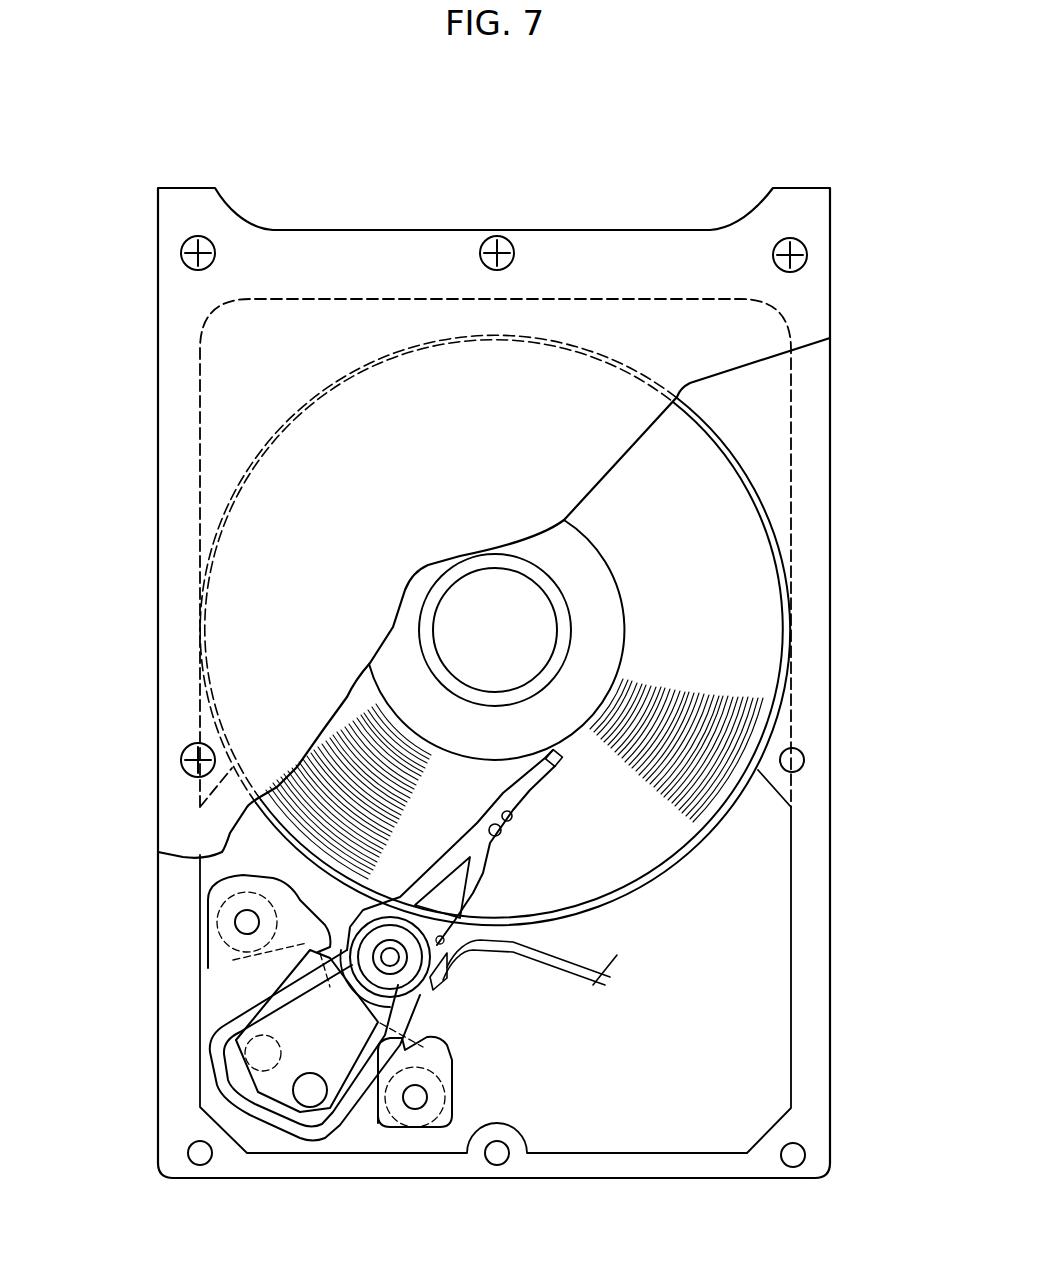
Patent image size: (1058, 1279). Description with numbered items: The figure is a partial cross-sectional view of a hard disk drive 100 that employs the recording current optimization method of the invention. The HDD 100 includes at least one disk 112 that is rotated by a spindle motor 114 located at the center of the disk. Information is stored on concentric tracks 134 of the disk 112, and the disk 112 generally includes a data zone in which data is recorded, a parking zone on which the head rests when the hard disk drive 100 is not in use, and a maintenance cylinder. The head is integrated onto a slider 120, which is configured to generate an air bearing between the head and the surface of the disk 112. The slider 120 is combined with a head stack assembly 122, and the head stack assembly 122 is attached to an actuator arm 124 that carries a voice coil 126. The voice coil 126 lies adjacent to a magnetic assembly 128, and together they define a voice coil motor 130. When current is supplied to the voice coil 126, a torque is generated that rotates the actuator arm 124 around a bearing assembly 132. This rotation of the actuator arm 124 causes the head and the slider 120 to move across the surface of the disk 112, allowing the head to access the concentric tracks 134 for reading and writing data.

The hard disk drive 100 is at (607, 168).
The disk 112 is at (752, 561).
The spindle motor 114 is at (473, 608).
The slider 120 is at (557, 767).
The head stack assembly 122 is at (520, 805).
The actuator arm 124 is at (305, 977).
The voice coil 126 is at (250, 1042).
The magnetic assembly 128 is at (247, 990).
The voice coil motor 130 is at (363, 1110).
The bearing assembly 132 is at (402, 967).
The concentric tracks 134 is at (353, 750).